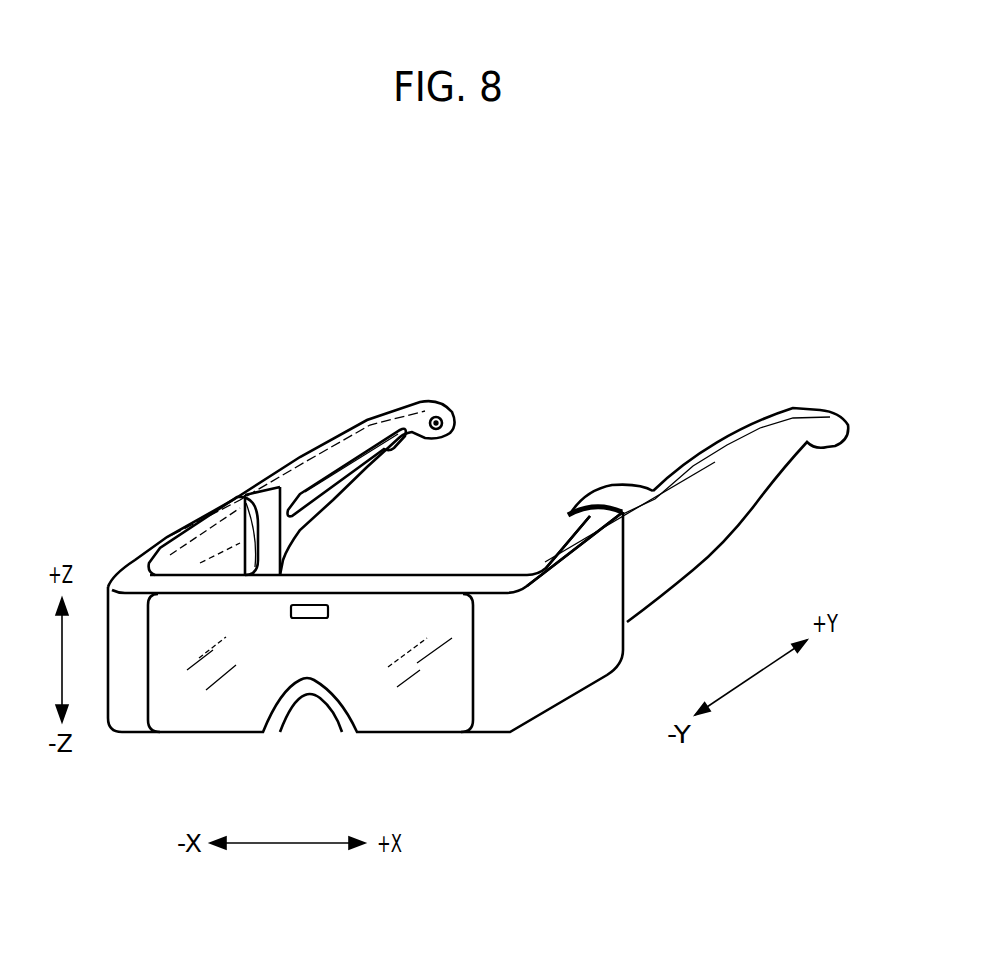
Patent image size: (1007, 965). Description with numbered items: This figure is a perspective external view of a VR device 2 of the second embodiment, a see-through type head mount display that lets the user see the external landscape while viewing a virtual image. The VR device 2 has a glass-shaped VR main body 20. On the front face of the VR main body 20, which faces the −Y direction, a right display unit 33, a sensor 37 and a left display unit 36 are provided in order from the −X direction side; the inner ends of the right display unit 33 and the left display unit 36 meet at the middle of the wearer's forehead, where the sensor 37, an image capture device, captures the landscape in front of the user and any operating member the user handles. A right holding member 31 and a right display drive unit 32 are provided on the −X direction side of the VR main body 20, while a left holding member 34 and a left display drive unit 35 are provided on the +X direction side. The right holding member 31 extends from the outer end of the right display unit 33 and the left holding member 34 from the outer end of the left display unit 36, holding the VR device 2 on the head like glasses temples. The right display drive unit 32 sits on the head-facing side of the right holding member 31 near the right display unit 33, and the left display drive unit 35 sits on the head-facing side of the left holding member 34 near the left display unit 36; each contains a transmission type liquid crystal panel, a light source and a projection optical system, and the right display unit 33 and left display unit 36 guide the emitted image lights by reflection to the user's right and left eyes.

The VR device 2 is at (745, 212).
The VR main body 20 is at (574, 645).
The right holding member 31 is at (325, 392).
The right display drive unit 32 is at (175, 552).
The right display unit 33 is at (187, 660).
The left holding member 34 is at (712, 405).
The left display drive unit 35 is at (553, 542).
The left display unit 36 is at (395, 665).
The sensor 37 is at (300, 618).